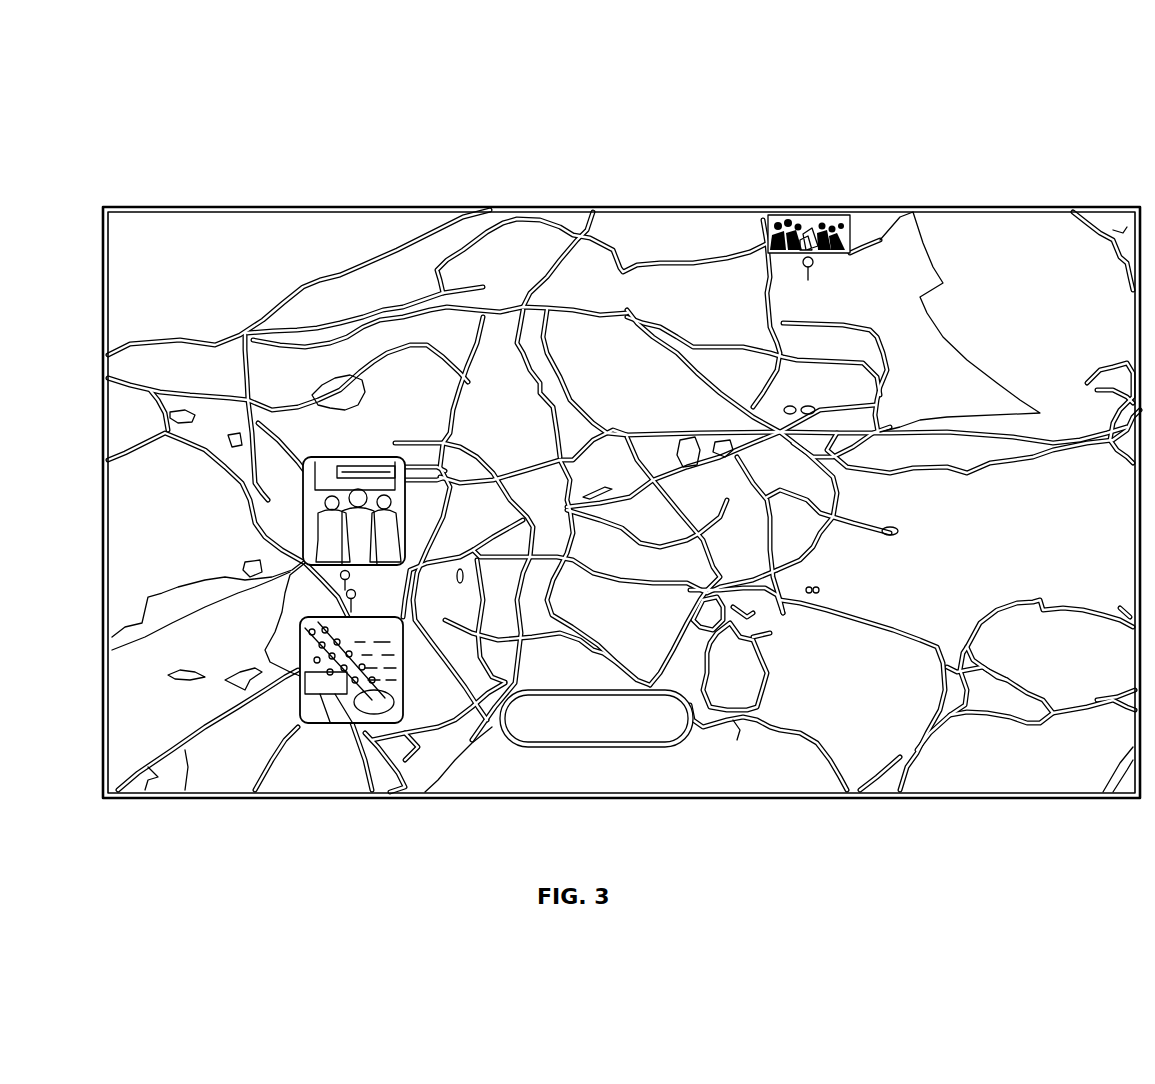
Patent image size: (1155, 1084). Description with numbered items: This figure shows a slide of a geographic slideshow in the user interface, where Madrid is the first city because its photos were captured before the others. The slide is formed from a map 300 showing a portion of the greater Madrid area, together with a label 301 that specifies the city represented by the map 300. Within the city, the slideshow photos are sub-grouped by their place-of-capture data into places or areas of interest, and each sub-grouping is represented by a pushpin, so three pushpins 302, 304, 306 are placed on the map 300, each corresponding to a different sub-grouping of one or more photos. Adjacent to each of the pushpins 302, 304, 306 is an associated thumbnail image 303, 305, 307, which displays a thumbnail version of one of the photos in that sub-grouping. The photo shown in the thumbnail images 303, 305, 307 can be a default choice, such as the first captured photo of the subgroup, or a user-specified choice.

The map 300 is at (163, 128).
The label 301 is at (582, 742).
The pushpin 302 is at (298, 630).
The thumbnail image 303 is at (325, 723).
The pushpin 304 is at (305, 567).
The thumbnail image 305 is at (338, 457).
The pushpin 306 is at (848, 256).
The thumbnail image 307 is at (825, 220).